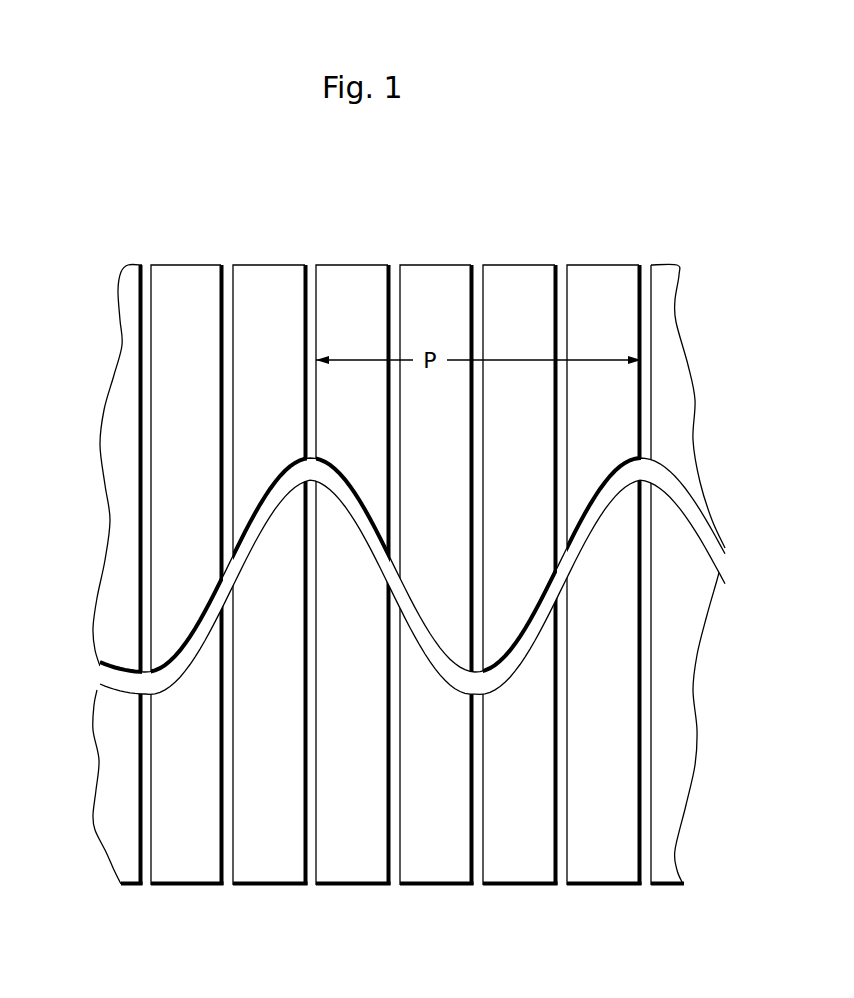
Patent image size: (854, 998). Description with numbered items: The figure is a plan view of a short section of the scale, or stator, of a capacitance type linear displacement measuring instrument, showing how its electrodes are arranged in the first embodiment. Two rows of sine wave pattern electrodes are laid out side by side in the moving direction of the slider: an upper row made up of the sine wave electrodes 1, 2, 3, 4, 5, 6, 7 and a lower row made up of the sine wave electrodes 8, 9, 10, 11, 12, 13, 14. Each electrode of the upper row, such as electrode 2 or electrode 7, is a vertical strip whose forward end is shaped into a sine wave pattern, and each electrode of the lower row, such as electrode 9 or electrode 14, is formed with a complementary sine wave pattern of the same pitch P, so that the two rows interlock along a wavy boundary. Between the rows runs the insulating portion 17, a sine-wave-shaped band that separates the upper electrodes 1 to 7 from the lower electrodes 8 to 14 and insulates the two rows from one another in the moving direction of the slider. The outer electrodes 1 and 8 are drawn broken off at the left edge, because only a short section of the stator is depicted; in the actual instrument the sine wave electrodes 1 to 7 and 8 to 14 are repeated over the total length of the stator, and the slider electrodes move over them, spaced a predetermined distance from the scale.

The sine wave pattern electrode 1 is at (121, 342).
The sine wave pattern electrode 2 is at (193, 264).
The sine wave pattern electrode 3 is at (275, 264).
The sine wave pattern electrode 4 is at (359, 264).
The sine wave pattern electrode 5 is at (436, 264).
The sine wave pattern electrode 6 is at (522, 264).
The sine wave pattern electrode 7 is at (612, 264).
The sine wave pattern electrode 8 is at (93, 827).
The sine wave pattern electrode 9 is at (194, 887).
The sine wave pattern electrode 10 is at (276, 887).
The sine wave pattern electrode 11 is at (358, 887).
The sine wave pattern electrode 12 is at (442, 887).
The sine wave pattern electrode 13 is at (532, 887).
The sine wave pattern electrode 14 is at (616, 887).
The insulating portion 17 is at (680, 492).